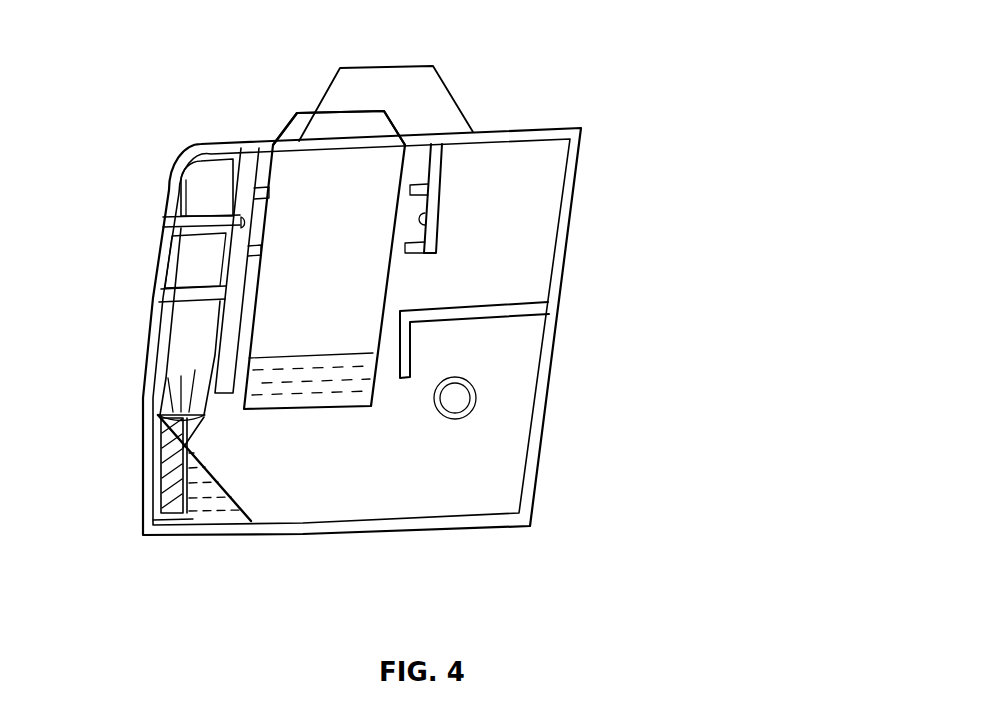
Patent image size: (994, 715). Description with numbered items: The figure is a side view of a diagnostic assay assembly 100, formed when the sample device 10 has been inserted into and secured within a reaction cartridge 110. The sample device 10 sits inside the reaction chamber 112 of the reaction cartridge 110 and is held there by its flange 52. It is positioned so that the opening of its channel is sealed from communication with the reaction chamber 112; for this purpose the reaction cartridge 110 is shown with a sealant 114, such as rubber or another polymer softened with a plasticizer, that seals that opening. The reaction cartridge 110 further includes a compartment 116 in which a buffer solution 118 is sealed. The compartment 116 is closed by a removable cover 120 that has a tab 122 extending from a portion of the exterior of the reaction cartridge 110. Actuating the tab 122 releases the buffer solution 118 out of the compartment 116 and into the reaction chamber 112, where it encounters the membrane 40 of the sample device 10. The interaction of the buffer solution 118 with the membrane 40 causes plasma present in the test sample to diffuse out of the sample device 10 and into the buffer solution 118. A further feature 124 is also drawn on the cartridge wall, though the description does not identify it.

The diagnostic assay assembly 100 is at (588, 30).
The sample device 10 is at (152, 145).
The flange 52 is at (238, 225).
The reaction cartridge 110 is at (585, 173).
The reaction chamber 112 is at (240, 480).
The sealant 114 is at (176, 529).
The compartment 116 is at (308, 110).
The buffer solution 118 is at (340, 392).
The removable cover 120 is at (335, 317).
The tab 122 is at (342, 126).
The port 124 is at (446, 400).
The membrane 40 is at (167, 480).